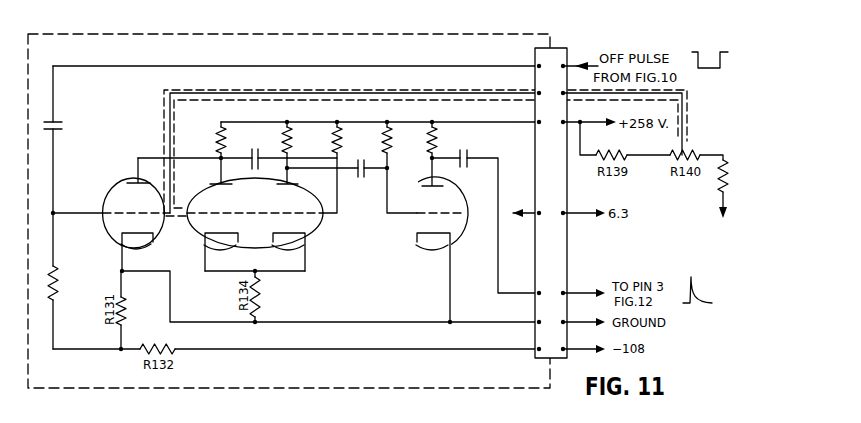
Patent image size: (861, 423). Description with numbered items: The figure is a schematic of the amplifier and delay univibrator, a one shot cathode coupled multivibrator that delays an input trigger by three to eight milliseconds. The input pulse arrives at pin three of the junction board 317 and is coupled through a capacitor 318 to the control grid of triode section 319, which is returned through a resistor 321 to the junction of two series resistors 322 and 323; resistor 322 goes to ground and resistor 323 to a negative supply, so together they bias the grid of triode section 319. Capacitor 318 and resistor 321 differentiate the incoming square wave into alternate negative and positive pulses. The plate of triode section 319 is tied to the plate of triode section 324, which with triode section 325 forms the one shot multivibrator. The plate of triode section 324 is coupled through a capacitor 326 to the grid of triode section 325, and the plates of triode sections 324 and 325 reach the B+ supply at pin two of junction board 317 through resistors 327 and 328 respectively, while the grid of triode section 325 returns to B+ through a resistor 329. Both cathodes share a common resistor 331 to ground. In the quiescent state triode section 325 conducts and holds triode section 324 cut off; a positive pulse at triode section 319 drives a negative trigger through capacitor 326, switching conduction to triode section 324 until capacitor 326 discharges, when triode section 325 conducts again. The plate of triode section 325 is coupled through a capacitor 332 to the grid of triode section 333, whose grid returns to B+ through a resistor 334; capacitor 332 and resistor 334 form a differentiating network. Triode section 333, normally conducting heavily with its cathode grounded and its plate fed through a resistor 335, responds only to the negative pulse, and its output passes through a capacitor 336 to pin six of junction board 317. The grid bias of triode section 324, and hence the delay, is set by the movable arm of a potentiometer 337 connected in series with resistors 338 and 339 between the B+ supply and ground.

The junction board 317 is at (553, 47).
The capacitor 318 is at (64, 132).
The triode section 319 is at (127, 182).
The resistor 321 is at (58, 290).
The resistor 322 is at (126, 315).
The resistor 323 is at (168, 349).
The triode section 324 is at (213, 182).
The triode section 325 is at (323, 226).
The capacitor 326 is at (258, 171).
The resistor 327 is at (219, 128).
The resistor 328 is at (292, 142).
The resistor 329 is at (341, 141).
The common resistor 331 is at (260, 299).
The capacitor 332 is at (361, 179).
The triode section 333 is at (463, 200).
The resistor 334 is at (390, 144).
The resistor 335 is at (436, 144).
The capacitor 336 is at (468, 152).
The potentiometer 337 is at (694, 152).
The resistor 338 is at (623, 157).
The resistor 339 is at (728, 183).